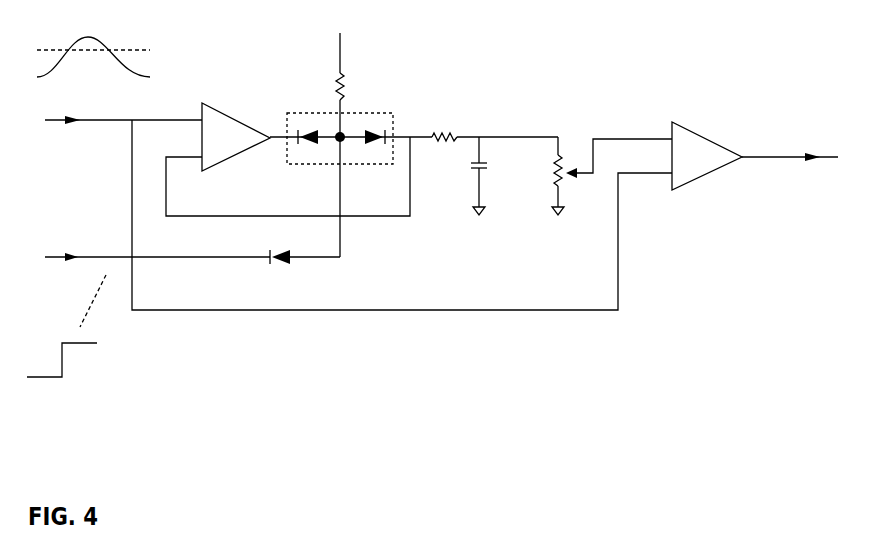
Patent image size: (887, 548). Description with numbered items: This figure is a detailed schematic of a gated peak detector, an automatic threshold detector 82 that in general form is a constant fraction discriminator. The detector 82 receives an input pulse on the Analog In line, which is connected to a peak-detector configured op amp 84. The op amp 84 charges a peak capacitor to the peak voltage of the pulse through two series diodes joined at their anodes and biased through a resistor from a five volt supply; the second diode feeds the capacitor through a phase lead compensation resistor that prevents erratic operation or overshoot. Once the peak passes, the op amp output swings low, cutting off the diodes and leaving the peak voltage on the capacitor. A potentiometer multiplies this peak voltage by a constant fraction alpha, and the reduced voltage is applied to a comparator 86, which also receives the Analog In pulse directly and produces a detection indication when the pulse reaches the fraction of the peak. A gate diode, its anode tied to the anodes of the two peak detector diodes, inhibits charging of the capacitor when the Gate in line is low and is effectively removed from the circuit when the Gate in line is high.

The automatic threshold detector 82 is at (692, 326).
The peak-detector configured op amp 84 is at (246, 118).
The comparator 86 is at (700, 183).